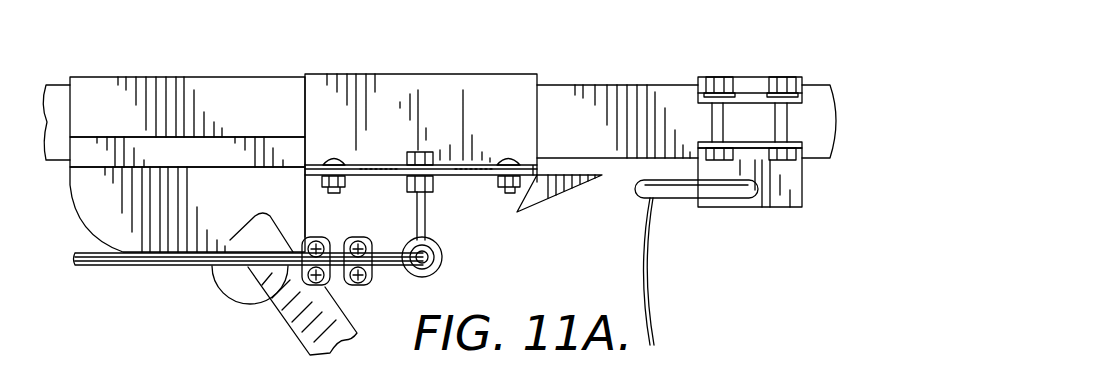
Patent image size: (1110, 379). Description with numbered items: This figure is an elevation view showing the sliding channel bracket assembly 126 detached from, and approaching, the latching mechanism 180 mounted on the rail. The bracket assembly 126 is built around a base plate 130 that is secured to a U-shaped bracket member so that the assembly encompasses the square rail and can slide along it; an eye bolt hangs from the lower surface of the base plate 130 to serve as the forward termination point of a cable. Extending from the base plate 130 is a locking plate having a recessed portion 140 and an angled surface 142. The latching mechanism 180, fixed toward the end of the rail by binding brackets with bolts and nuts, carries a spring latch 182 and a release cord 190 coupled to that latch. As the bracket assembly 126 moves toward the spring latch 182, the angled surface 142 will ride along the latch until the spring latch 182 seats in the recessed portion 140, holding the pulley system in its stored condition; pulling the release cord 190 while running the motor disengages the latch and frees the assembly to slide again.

The sliding channel bracket assembly 126 is at (438, 70).
The base plate 130 is at (564, 218).
The recessed portion 140 is at (512, 196).
The angled surface 142 is at (557, 200).
The latching mechanism 180 is at (758, 72).
The spring latch 182 is at (673, 194).
The release cord 190 is at (650, 257).